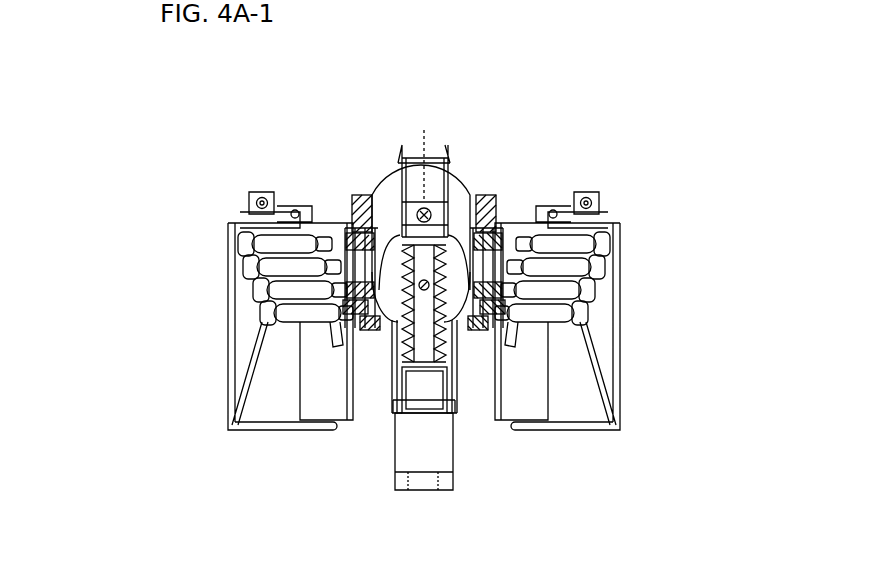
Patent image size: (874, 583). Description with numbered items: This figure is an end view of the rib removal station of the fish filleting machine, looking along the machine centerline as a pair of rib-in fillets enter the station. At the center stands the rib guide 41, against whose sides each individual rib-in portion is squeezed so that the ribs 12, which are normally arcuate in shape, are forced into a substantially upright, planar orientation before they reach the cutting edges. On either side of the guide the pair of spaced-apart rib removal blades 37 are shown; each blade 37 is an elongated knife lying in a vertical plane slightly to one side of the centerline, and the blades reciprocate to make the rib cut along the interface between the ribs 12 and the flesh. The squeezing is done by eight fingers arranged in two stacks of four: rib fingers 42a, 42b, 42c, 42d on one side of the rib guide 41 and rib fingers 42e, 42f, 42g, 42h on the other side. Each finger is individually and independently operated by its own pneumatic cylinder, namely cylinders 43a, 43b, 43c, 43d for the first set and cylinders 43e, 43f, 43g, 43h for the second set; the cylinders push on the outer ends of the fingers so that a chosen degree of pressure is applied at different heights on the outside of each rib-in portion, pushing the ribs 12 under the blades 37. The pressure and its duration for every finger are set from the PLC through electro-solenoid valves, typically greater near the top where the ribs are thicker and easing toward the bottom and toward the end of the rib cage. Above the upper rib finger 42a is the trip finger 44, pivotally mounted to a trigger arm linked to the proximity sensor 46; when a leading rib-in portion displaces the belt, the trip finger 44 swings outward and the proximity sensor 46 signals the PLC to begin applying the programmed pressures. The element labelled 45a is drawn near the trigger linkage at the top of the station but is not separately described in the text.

The ribs 12 is at (367, 200).
The rib removal blade 37 is at (390, 375).
The rib guide 41 is at (423, 333).
The trip finger 44 is at (372, 185).
The proximity sensor 46 is at (346, 11).
The connector element 45a is at (511, 7).
The rib finger 42a is at (360, 245).
The rib finger 42b is at (365, 290).
The rib finger 42c is at (352, 306).
The rib finger 42d is at (372, 321).
The rib finger 42e is at (488, 244).
The rib finger 42f is at (483, 290).
The rib finger 42g is at (496, 306).
The rib finger 42h is at (476, 321).
The pneumatic cylinder 43a is at (243, 238).
The pneumatic cylinder 43b is at (250, 262).
The pneumatic cylinder 43c is at (255, 290).
The pneumatic cylinder 43d is at (265, 312).
The pneumatic cylinder 43e is at (606, 240).
The pneumatic cylinder 43f is at (600, 262).
The pneumatic cylinder 43g is at (592, 290).
The pneumatic cylinder 43h is at (585, 312).